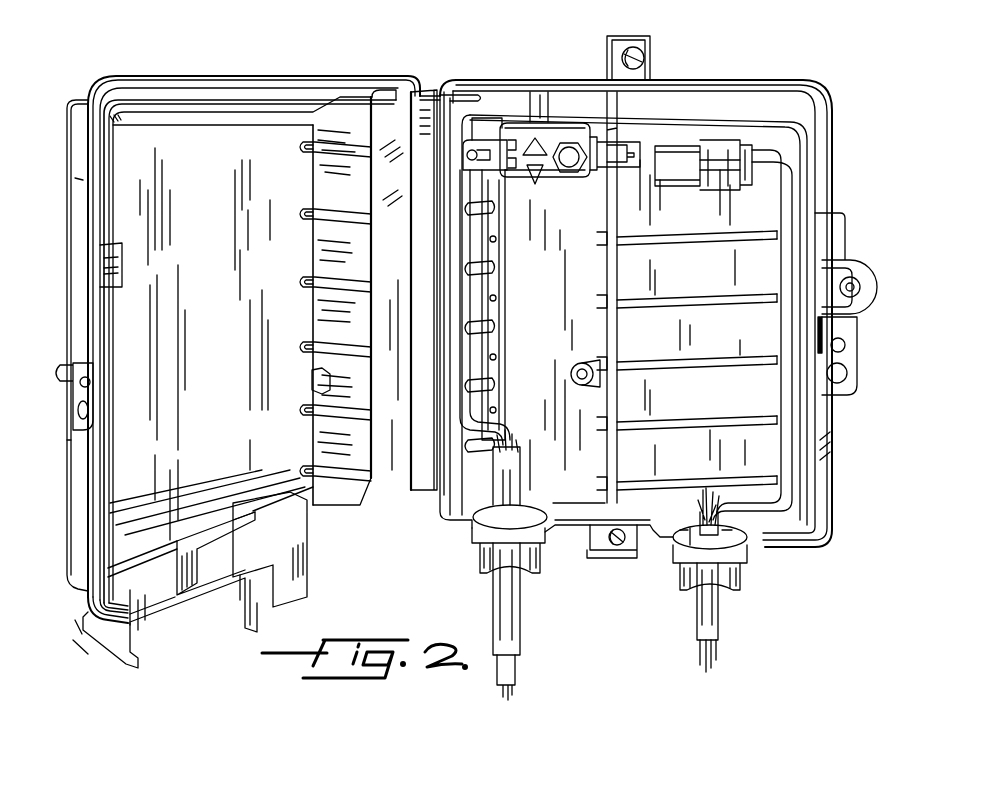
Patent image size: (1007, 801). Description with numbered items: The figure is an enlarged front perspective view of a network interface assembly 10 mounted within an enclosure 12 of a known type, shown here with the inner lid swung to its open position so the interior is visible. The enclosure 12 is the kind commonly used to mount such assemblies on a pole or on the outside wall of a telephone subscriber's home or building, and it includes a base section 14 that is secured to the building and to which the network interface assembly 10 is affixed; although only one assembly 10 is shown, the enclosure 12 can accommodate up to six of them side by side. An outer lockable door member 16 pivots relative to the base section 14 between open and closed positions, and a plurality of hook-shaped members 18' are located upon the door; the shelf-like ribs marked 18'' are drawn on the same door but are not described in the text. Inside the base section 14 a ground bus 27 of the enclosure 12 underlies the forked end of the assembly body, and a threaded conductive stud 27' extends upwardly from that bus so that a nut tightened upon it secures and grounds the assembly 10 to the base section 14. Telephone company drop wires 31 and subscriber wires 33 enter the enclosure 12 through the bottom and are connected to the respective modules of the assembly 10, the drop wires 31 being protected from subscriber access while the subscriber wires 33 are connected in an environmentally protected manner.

The network interface assembly 10 is at (579, 110).
The enclosure 12 is at (478, 60).
The base section 14 is at (748, 100).
The outer door member 16 is at (165, 137).
The hook-shaped members 18' is at (288, 311).
The shelf rib 18'' is at (288, 348).
The ground bus 27 is at (521, 305).
The threaded conductive stud 27' is at (523, 326).
The telephone company drop wires 31 is at (520, 668).
The subscriber wires 33 is at (775, 178).